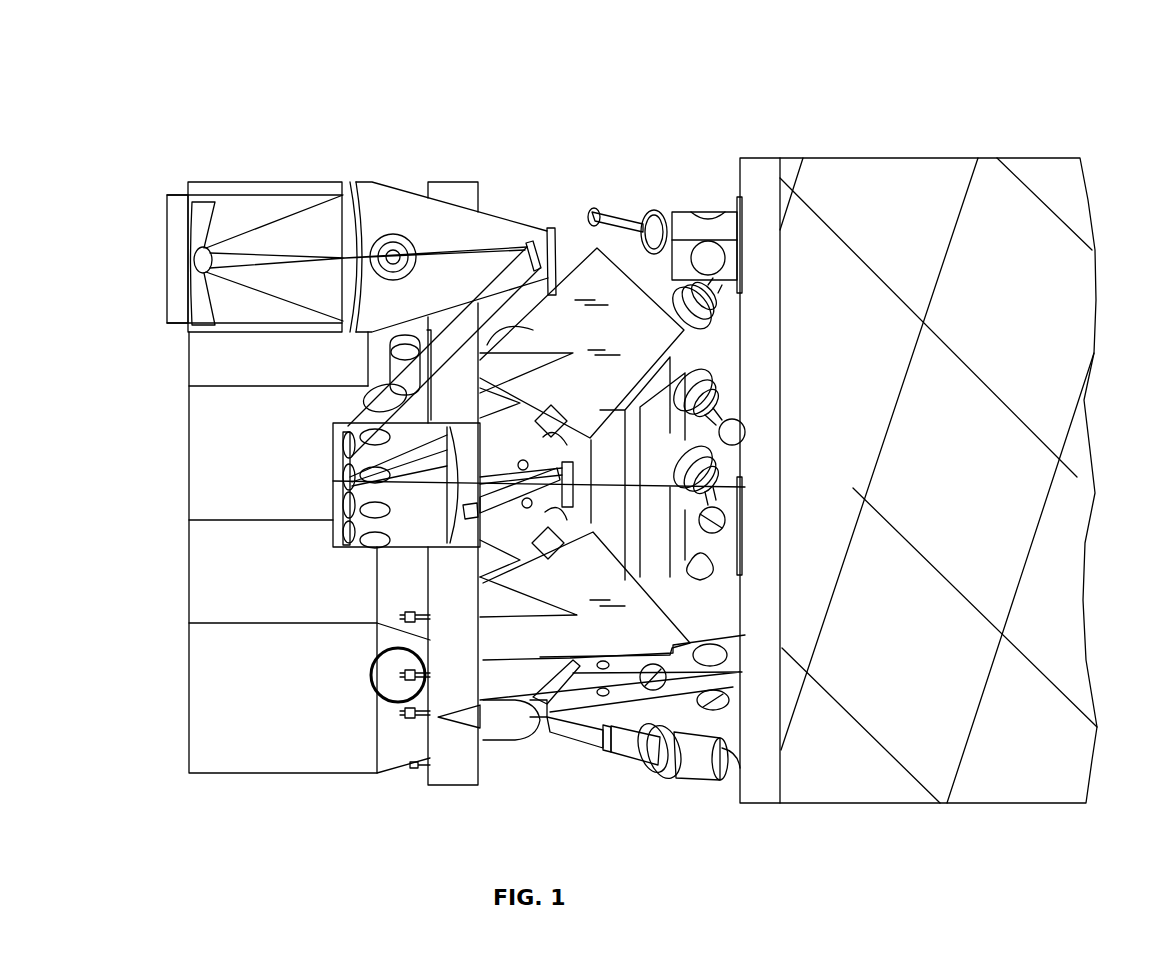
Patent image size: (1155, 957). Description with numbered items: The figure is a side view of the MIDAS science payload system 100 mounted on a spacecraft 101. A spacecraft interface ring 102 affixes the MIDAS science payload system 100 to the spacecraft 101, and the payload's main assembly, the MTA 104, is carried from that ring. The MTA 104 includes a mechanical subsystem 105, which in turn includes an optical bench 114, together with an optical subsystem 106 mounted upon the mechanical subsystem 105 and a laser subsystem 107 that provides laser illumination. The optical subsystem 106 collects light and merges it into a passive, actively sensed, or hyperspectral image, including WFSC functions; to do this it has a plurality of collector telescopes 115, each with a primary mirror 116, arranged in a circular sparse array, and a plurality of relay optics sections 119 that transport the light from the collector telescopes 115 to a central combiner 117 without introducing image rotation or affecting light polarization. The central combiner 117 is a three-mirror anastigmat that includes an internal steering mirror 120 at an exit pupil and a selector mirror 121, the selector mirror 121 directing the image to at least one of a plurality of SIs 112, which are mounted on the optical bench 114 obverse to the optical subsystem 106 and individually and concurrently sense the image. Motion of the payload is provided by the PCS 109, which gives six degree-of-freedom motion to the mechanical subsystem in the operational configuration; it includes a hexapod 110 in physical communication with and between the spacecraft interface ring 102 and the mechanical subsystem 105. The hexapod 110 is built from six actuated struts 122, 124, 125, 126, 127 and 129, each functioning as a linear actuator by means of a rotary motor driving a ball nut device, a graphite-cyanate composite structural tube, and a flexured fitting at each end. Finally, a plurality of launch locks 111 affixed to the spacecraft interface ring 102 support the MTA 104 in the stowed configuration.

The MIDAS science payload system 100 is at (845, 110).
The spacecraft 101 is at (1010, 785).
The spacecraft interface ring 102 is at (745, 803).
The MTA 104 is at (475, 92).
The mechanical subsystem 105 is at (412, 783).
The optical subsystem 106 is at (425, 146).
The laser subsystem 107 is at (585, 260).
The PCS 109 is at (740, 92).
The hexapod 110 is at (638, 771).
The launch locks 111 is at (735, 690).
The SIs 112 is at (722, 490).
The optical bench 114 is at (440, 790).
The collector telescopes 115 is at (305, 323).
The primary mirror 116 is at (356, 225).
The central combiner 117 is at (333, 481).
The relay optics sections 119 is at (683, 212).
The internal steering mirror 120 is at (560, 525).
The selector mirror 121 is at (470, 525).
The actuated strut 122 is at (740, 527).
The actuated strut 124 is at (740, 385).
The actuated strut 125 is at (745, 322).
The actuated strut 126 is at (668, 785).
The actuated strut 127 is at (690, 778).
The actuated strut 129 is at (606, 238).